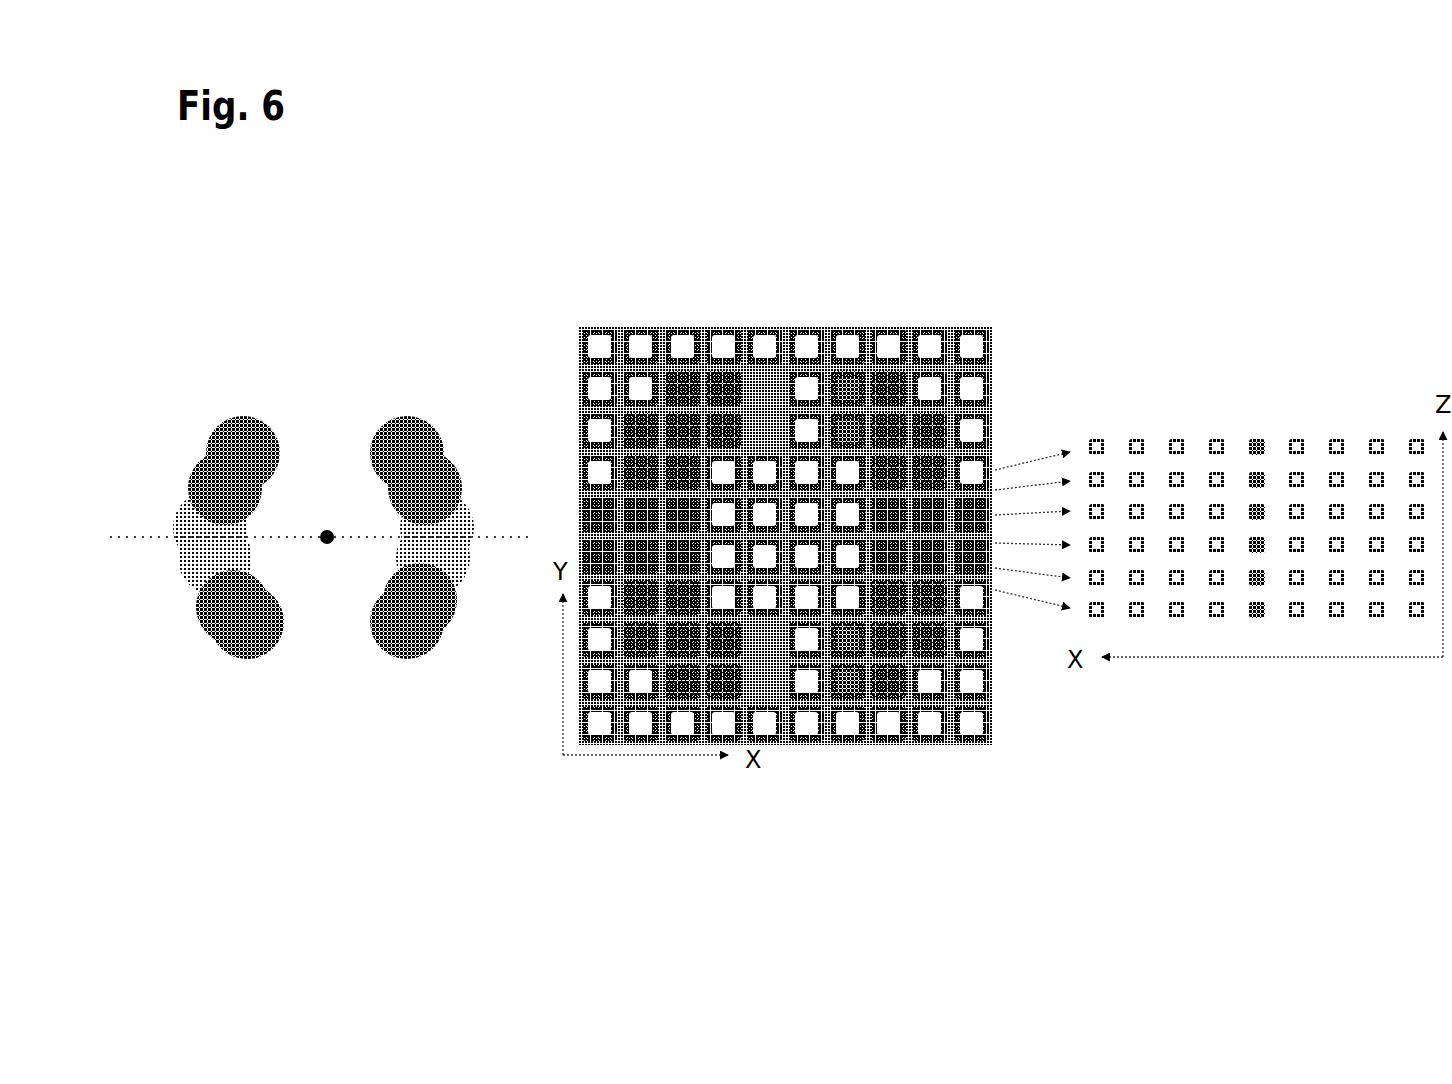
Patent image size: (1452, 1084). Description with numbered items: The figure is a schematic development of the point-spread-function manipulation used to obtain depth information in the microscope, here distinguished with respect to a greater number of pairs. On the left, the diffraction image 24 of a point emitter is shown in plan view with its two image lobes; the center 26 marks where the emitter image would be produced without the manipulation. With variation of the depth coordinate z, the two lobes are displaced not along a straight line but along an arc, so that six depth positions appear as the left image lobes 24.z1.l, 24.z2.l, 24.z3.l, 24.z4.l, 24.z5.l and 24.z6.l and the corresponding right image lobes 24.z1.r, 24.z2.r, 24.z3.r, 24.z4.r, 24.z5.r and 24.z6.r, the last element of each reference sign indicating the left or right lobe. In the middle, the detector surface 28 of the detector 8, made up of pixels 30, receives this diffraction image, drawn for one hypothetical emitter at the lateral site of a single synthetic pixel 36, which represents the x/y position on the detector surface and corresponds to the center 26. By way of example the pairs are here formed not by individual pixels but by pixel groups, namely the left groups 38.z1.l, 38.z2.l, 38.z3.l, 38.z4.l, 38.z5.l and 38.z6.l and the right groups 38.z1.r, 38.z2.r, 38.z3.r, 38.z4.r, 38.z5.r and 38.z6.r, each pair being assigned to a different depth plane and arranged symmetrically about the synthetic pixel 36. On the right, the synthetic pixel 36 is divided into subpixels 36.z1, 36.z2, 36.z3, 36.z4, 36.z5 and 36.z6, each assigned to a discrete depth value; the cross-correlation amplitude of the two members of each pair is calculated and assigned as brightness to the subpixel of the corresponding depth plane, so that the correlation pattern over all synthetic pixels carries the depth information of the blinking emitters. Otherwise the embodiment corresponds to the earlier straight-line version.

The detector 8 is at (962, 234).
The diffraction image 24 is at (326, 292).
The left image lobe at depth position z1 24.z1.l is at (272, 440).
The left image lobe at depth position z2 24.z2.l is at (200, 458).
The left image lobe at depth position z3 24.z3.l is at (188, 527).
The left image lobe at depth position z4 24.z4.l is at (183, 563).
The left image lobe at depth position z5 24.z5.l is at (195, 602).
The left image lobe at depth position z6 24.z6.l is at (242, 643).
The right image lobe at depth position z1 24.z1.r is at (407, 643).
The right image lobe at depth position z2 24.z2.r is at (442, 600).
The right image lobe at depth position z3 24.z3.r is at (467, 547).
The right image lobe at depth position z4 24.z4.r is at (405, 518).
The right image lobe at depth position z5 24.z5.r is at (450, 470).
The right image lobe at depth position z6 24.z6.r is at (378, 440).
The center 26 is at (327, 528).
The detector surface 28 is at (847, 323).
The pixel 30 is at (717, 345).
The synthetic pixel 36 is at (777, 533).
The subpixel for depth position z1 36.z1 is at (1257, 440).
The subpixel for depth position z2 36.z2 is at (1262, 472).
The subpixel for depth position z3 36.z3 is at (1260, 513).
The subpixel for depth position z4 36.z4 is at (1257, 548).
The subpixel for depth position z5 36.z5 is at (1257, 580).
The subpixel for depth position z6 36.z6 is at (1257, 612).
The left pixel group for depth position z1 38.z1.l is at (662, 416).
The left pixel group for depth position z2 38.z2.l is at (670, 467).
The left pixel group for depth position z3 38.z3.l is at (677, 517).
The left pixel group for depth position z4 38.z4.l is at (677, 558).
The left pixel group for depth position z5 38.z5.l is at (677, 603).
The left pixel group for depth position z6 38.z6.l is at (720, 650).
The right pixel group for depth position z1 38.z1.r is at (847, 645).
The right pixel group for depth position z2 38.z2.r is at (929, 605).
The right pixel group for depth position z3 38.z3.r is at (980, 555).
The right pixel group for depth position z4 38.z4.r is at (980, 517).
The right pixel group for depth position z5 38.z5.r is at (887, 467).
The right pixel group for depth position z6 38.z6.r is at (870, 420).